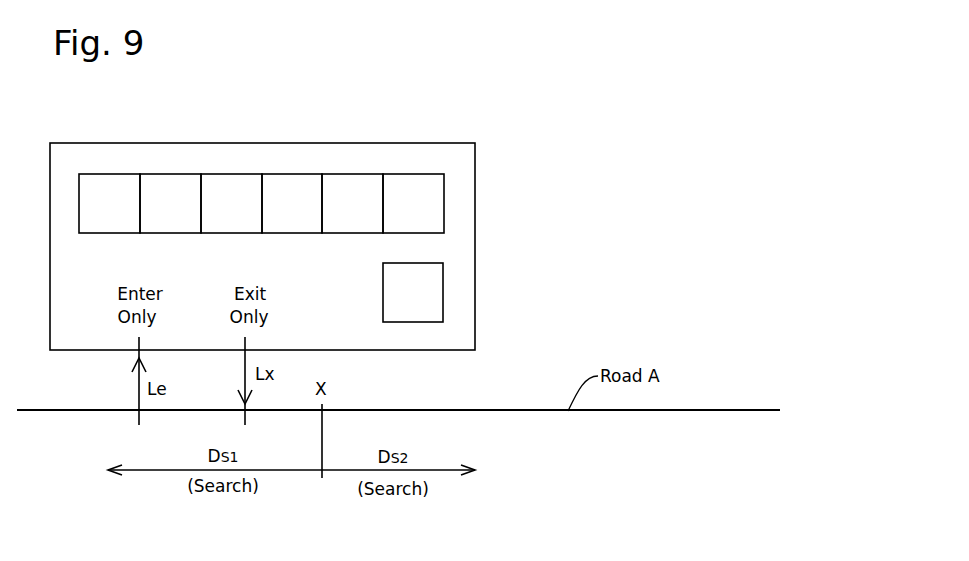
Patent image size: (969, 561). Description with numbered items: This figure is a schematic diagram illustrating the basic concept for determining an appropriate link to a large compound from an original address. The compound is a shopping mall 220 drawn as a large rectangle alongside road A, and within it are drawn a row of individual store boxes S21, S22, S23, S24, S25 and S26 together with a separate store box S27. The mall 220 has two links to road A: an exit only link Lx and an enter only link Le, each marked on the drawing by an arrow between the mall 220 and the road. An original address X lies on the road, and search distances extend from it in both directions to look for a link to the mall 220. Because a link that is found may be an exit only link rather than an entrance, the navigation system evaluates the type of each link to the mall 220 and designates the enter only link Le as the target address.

The shopping mall 220 is at (261, 152).
The store S21 is at (109, 203).
The store S22 is at (170, 203).
The store S23 is at (231, 203).
The store S24 is at (292, 203).
The store S25 is at (352, 203).
The store S26 is at (413, 203).
The store S27 is at (413, 292).